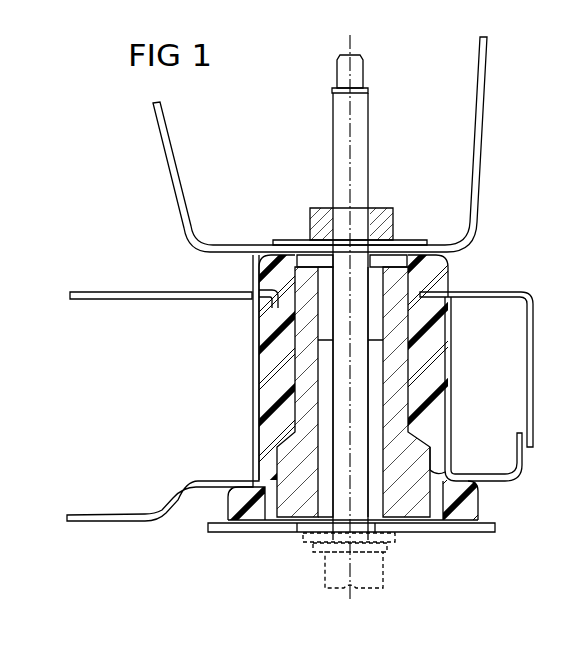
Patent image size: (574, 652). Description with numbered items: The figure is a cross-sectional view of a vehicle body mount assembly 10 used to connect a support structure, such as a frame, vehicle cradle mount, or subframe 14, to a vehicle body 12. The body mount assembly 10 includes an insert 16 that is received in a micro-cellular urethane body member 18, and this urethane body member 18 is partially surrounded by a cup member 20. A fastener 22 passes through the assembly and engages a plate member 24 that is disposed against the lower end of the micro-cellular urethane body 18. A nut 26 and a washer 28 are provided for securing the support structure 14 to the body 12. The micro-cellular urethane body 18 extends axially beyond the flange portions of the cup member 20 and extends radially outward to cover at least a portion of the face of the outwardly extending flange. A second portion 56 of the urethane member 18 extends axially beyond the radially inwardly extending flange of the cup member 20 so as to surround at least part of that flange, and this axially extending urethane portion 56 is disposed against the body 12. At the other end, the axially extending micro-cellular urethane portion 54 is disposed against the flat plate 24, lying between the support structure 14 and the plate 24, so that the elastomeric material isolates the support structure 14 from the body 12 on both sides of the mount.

The vehicle body mount assembly 10 is at (505, 232).
The vehicle body 12 is at (480, 130).
The subframe 14 is at (528, 352).
The insert 16 is at (410, 363).
The micro-cellular urethane body member 18 is at (432, 409).
The cup member 20 is at (455, 433).
The fastener 22 is at (362, 170).
The plate member 24 is at (468, 532).
The nut 26 is at (318, 222).
The washer 28 is at (287, 242).
The axially extending micro-cellular urethane portion 54 is at (230, 508).
The second portion of the micro-cellular polyurethane member 56 is at (270, 266).